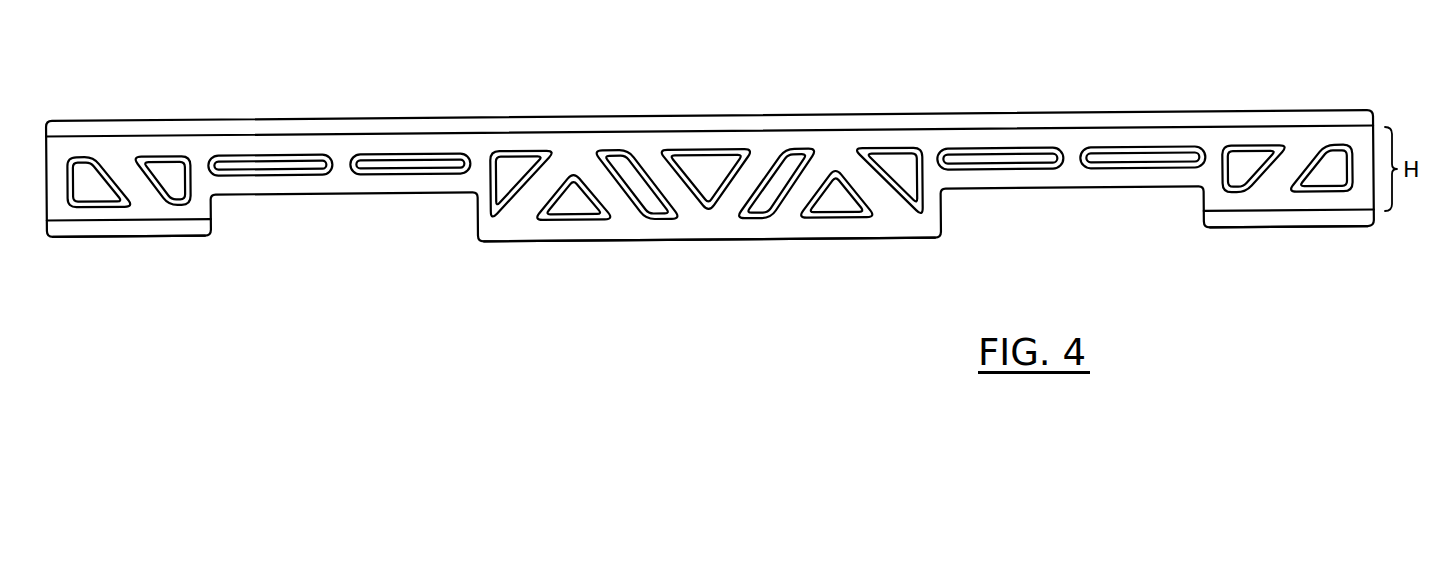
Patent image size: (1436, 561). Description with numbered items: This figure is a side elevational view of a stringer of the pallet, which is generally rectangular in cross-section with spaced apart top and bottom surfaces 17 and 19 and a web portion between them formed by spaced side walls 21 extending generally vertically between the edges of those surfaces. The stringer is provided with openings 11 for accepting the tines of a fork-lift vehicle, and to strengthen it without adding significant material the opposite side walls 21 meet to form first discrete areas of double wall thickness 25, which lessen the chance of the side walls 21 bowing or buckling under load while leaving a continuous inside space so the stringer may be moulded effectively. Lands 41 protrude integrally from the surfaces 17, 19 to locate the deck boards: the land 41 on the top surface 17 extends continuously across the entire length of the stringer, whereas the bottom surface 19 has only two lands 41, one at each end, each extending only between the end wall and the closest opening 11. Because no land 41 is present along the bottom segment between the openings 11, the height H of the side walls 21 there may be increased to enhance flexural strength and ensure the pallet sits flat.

The openings 11 is at (333, 223).
The top surface 17 is at (239, 114).
The bottom surface 19 is at (187, 240).
The side walls 21 is at (1267, 195).
The first discrete areas of double wall thickness 25 is at (1130, 153).
The land 41 is at (628, 120).